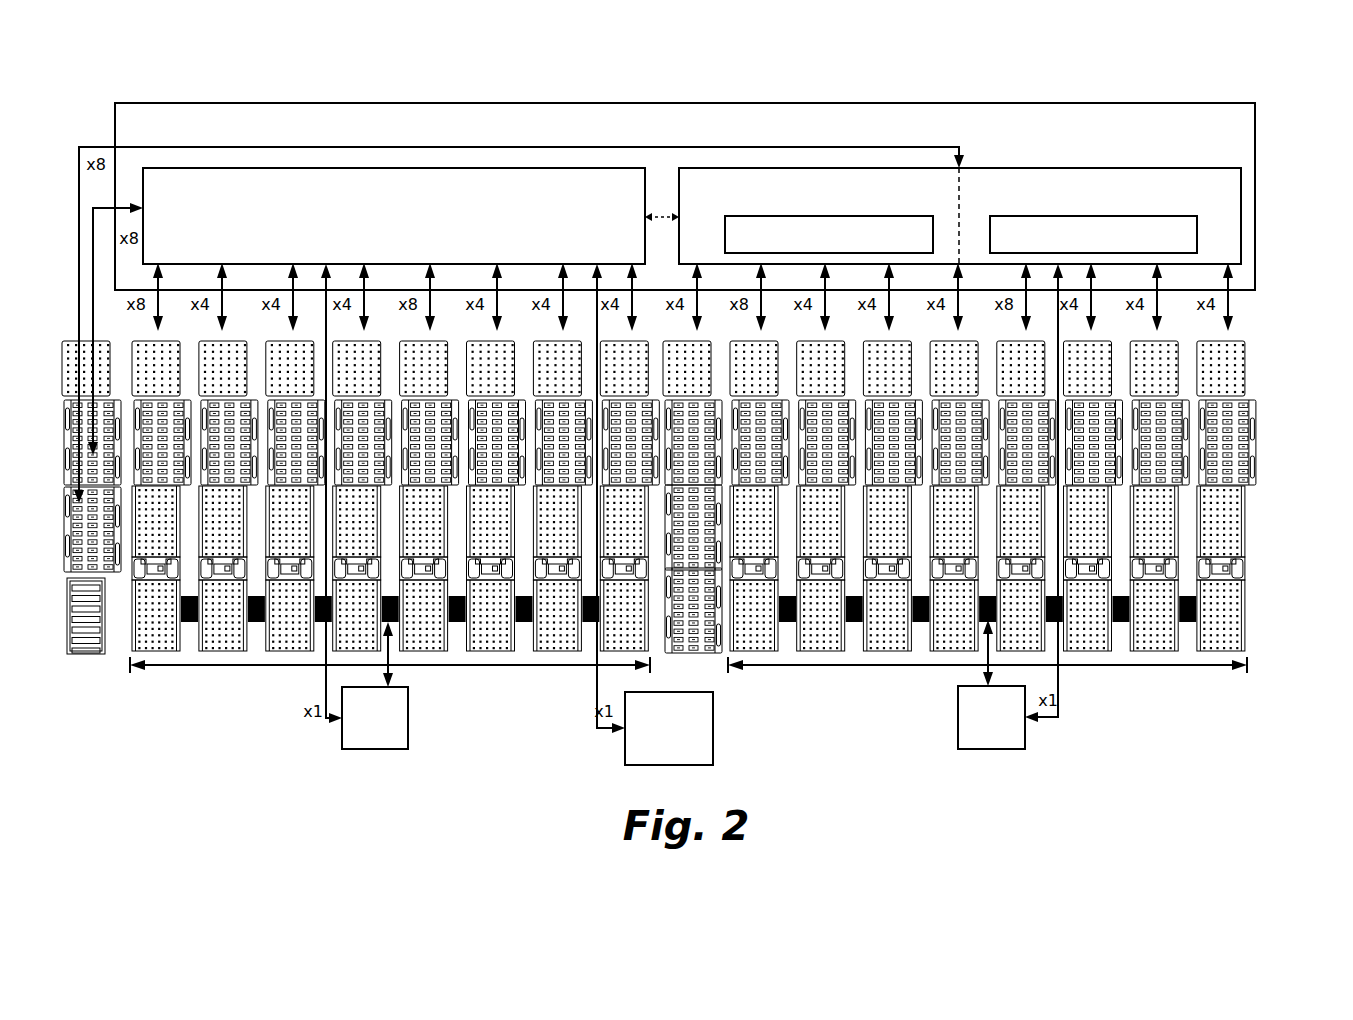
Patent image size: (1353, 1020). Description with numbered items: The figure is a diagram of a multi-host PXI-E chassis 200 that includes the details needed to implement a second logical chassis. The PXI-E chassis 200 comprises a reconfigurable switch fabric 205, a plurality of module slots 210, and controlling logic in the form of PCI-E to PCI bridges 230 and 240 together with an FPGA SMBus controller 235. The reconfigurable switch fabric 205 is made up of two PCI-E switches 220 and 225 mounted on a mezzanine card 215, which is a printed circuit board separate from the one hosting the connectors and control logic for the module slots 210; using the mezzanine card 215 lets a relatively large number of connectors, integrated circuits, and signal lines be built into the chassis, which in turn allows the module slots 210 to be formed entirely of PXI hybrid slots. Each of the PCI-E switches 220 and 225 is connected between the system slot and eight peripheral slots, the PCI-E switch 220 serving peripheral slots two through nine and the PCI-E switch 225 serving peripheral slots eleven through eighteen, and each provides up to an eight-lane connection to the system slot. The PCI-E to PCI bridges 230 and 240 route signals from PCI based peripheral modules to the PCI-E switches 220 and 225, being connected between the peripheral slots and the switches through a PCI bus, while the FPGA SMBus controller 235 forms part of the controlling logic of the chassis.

The PXI-E chassis 200 is at (690, 50).
The mezzanine card 215 is at (322, 114).
The PCI-E switch 220 is at (612, 208).
The PCI-E switch 225 is at (1222, 206).
The reconfigurable switch fabric 205 is at (734, 215).
The module slots 210 is at (1276, 312).
The PCI-E to PCI bridge 230 is at (408, 722).
The FPGA SMBus controller 235 is at (713, 750).
The PCI-E to PCI bridge 240 is at (958, 735).